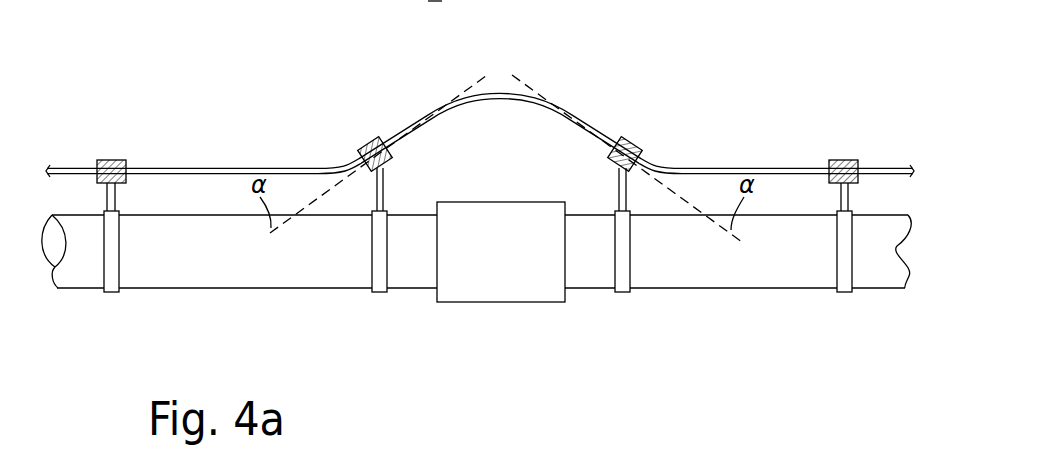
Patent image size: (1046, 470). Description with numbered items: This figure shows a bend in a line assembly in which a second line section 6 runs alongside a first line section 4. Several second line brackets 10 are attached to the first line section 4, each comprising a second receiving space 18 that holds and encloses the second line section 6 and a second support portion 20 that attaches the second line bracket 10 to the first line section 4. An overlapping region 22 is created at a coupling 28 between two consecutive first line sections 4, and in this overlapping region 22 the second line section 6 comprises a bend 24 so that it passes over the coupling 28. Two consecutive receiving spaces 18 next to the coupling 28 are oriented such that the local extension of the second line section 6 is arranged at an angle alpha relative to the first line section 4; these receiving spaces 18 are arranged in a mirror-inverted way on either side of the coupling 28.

The first line section 4 is at (217, 276).
The second line section 6 is at (211, 168).
The second line bracket 10 is at (360, 266).
The second receiving space 18 is at (115, 170).
The second support portion 20 is at (112, 281).
The overlapping region 22 is at (409, 302).
The bend 24 is at (505, 79).
The coupling 28 is at (500, 277).